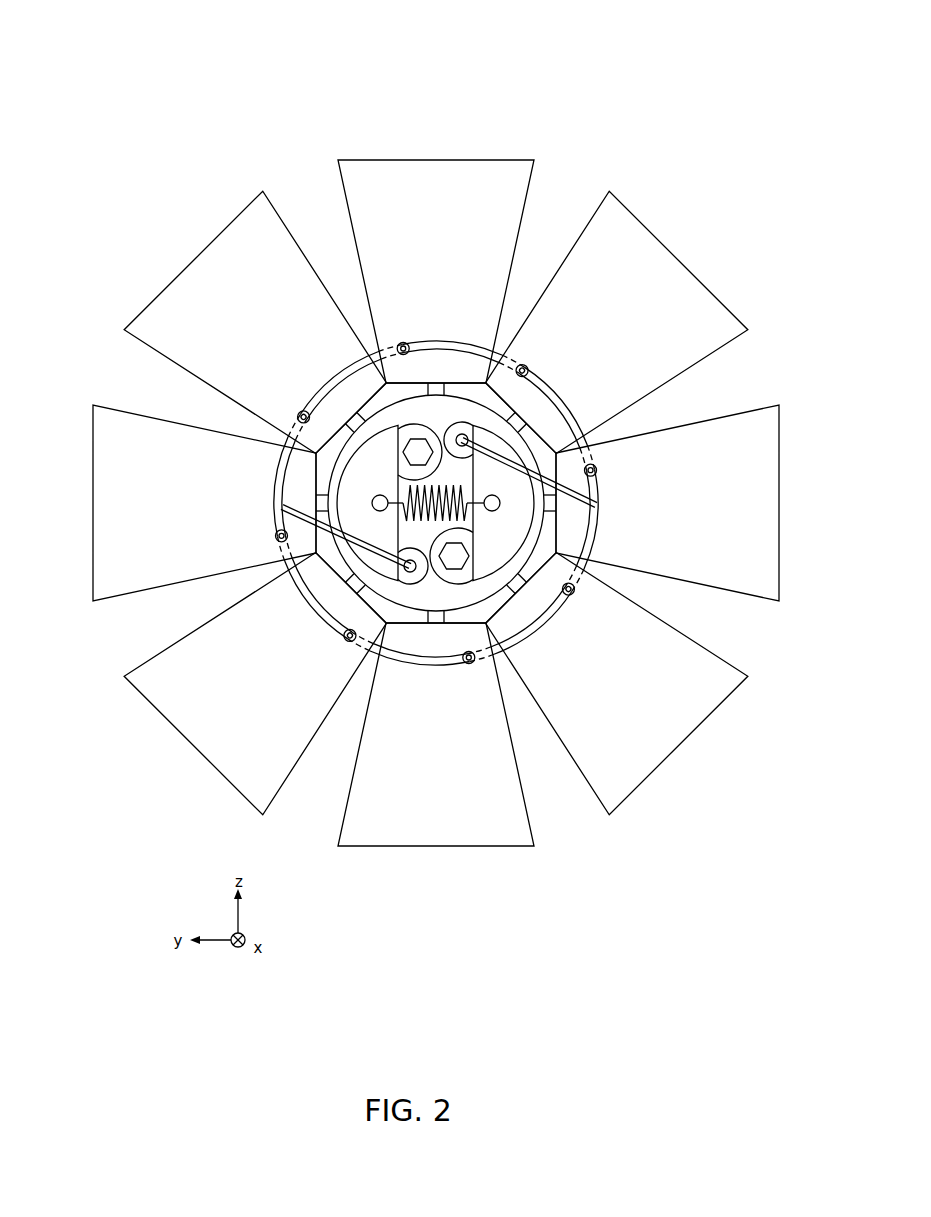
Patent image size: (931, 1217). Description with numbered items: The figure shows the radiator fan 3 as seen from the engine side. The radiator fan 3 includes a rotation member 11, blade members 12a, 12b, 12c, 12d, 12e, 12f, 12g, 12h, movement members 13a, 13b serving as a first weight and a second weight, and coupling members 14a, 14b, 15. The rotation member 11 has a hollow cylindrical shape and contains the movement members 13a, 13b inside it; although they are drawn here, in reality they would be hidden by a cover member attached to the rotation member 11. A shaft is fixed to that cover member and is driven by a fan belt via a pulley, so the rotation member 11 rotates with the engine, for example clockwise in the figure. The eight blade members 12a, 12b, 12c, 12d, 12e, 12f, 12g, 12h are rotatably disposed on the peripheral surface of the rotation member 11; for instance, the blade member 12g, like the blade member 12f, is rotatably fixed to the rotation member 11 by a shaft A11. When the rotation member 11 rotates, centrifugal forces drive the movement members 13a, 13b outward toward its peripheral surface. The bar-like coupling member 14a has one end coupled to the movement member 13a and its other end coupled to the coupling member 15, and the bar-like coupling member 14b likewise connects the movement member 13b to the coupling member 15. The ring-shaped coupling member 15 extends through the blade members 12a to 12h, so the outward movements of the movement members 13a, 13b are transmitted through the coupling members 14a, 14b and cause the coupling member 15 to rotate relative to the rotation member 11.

The radiator fan 3 is at (437, 65).
The rotation member 11 is at (380, 388).
The shaft A11 is at (318, 500).
The blade member 12a is at (438, 161).
The blade member 12b is at (684, 262).
The blade member 12c is at (781, 510).
The blade member 12d is at (672, 752).
The blade member 12e is at (436, 847).
The blade member 12f is at (192, 744).
The blade member 12g is at (93, 500).
The blade member 12h is at (193, 260).
The movement member 13a is at (363, 477).
The movement member 13b is at (497, 477).
The coupling member 14a is at (385, 558).
The coupling member 14b is at (588, 497).
The coupling member 15 is at (547, 627).